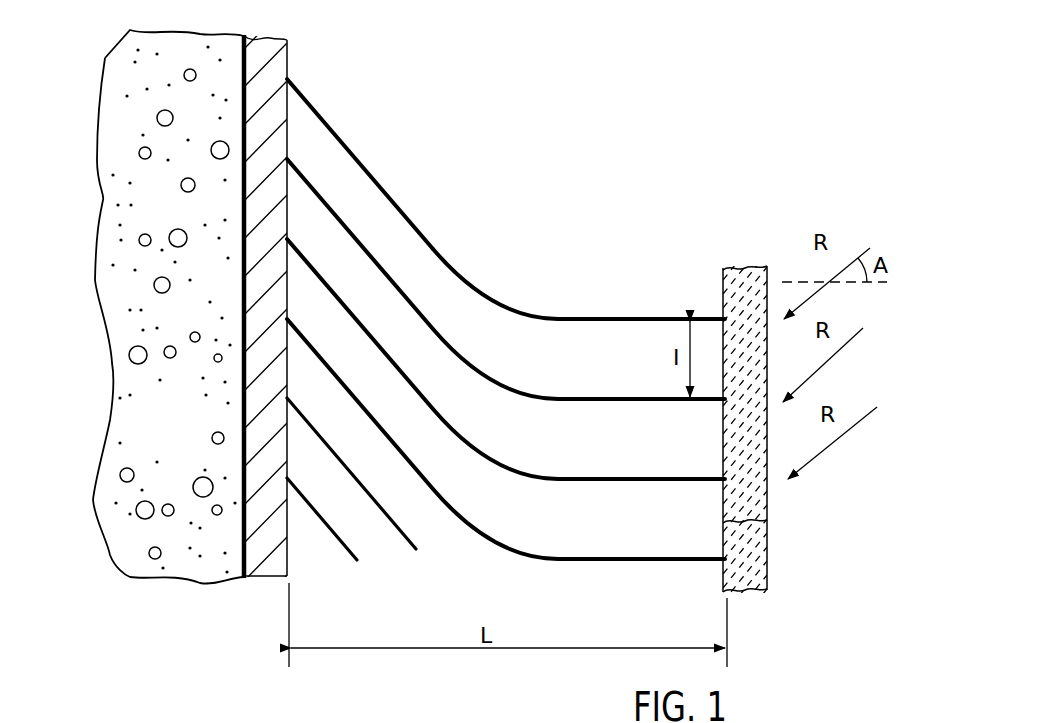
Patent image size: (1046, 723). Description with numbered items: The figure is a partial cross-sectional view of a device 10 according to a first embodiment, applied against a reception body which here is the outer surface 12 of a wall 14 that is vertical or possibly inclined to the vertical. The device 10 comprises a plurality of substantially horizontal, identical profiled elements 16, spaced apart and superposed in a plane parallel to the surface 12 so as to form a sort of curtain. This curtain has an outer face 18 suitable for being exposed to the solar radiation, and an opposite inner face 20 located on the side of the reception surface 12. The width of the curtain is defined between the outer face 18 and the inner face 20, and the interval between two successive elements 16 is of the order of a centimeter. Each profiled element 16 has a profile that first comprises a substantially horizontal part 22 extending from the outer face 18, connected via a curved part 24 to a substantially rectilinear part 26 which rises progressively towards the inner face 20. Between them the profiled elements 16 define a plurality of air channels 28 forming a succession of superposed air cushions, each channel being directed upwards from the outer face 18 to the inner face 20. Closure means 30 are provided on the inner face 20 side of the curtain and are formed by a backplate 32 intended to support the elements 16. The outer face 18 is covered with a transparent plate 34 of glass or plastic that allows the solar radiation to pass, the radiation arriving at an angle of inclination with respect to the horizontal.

The device 10 is at (506, 342).
The outer surface 12 is at (252, 523).
The wall 14 is at (96, 276).
The profiled elements 16 is at (517, 322).
The outer face 18 is at (767, 527).
The inner face 20 is at (283, 419).
The horizontal part 22 is at (637, 315).
The curved part 24 is at (506, 307).
The rectilinear part 26 is at (387, 195).
The air channels 28 is at (466, 400).
The closure means 30 is at (287, 127).
The backplate 32 is at (272, 35).
The transparent plate 34 is at (768, 564).